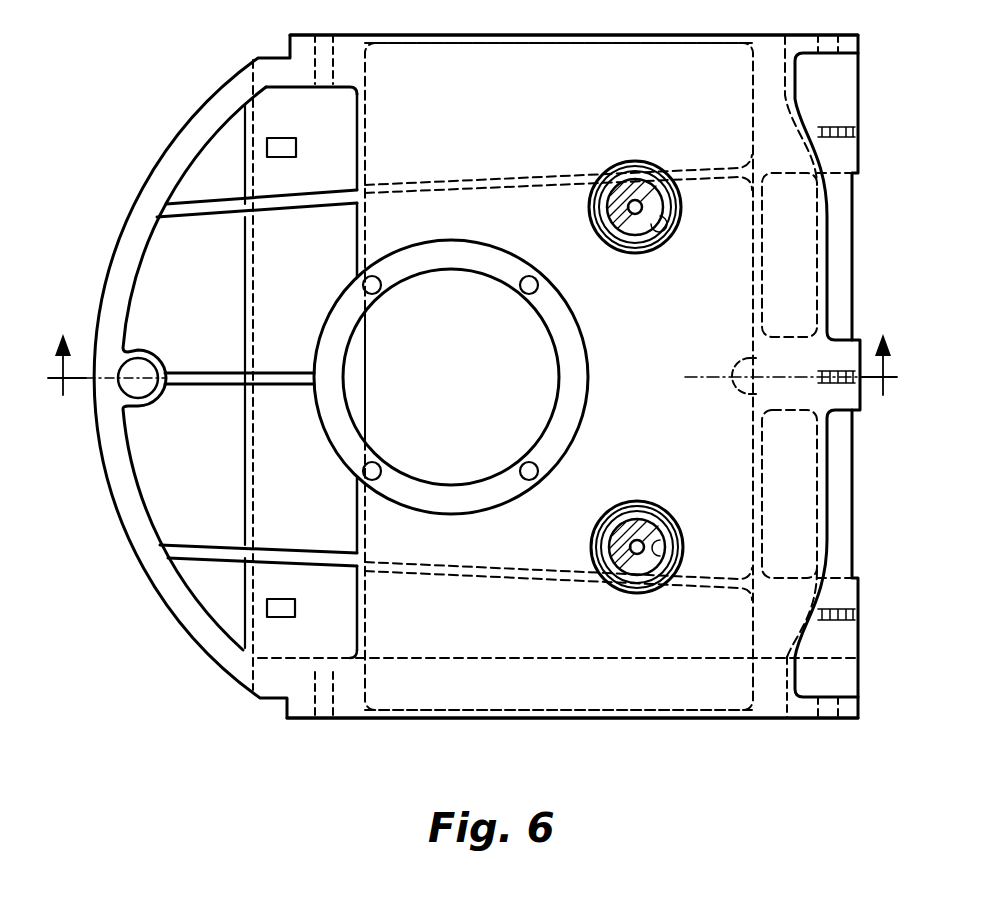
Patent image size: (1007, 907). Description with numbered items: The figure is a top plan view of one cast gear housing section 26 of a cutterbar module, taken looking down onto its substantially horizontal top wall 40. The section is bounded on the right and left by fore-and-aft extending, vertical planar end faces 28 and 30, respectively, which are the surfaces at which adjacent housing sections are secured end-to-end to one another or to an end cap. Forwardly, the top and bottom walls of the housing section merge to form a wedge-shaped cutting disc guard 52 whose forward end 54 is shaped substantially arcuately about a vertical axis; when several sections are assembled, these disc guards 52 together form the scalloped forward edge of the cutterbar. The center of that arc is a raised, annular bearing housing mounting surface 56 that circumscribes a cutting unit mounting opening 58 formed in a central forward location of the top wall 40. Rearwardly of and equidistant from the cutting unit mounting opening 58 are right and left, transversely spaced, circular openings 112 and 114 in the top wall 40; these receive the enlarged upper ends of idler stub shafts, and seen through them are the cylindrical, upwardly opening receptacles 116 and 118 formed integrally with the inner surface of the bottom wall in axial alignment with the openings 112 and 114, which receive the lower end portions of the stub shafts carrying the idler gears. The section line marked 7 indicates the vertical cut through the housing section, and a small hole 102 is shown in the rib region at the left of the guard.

The section line 7- 7 is at (476, 352).
The gear housing section 26 is at (122, 568).
The right end face 28 is at (448, 35).
The left end face 30 is at (605, 720).
The top wall 40 is at (658, 413).
The cutting disc guard 52 is at (200, 473).
The forward end 54 is at (181, 632).
The annular bearing housing mounting surface 56 is at (572, 343).
The cutting unit mounting opening 58 is at (556, 371).
The hole 102 is at (140, 362).
The right circular opening 112 is at (637, 253).
The left circular opening 114 is at (599, 523).
The right receptacle 116 is at (654, 219).
The left receptacle 118 is at (677, 538).